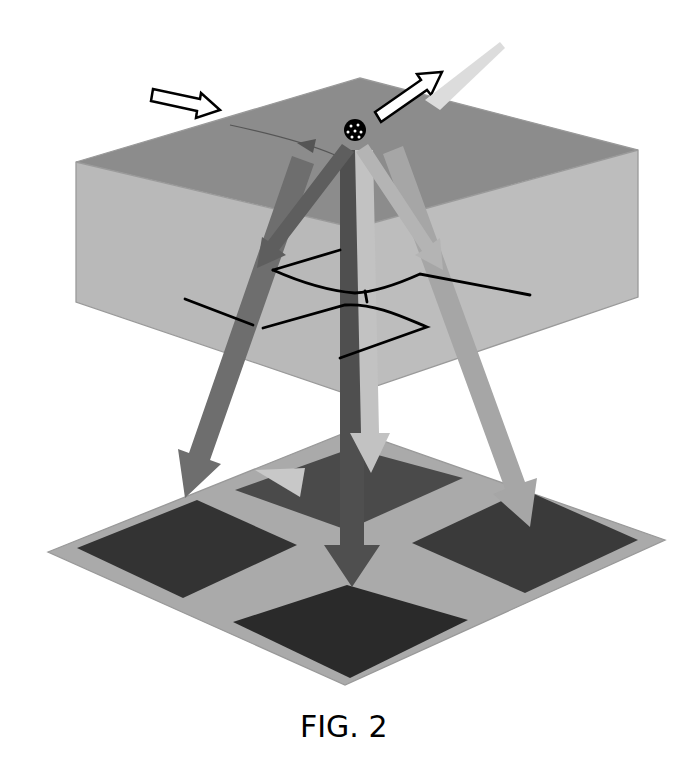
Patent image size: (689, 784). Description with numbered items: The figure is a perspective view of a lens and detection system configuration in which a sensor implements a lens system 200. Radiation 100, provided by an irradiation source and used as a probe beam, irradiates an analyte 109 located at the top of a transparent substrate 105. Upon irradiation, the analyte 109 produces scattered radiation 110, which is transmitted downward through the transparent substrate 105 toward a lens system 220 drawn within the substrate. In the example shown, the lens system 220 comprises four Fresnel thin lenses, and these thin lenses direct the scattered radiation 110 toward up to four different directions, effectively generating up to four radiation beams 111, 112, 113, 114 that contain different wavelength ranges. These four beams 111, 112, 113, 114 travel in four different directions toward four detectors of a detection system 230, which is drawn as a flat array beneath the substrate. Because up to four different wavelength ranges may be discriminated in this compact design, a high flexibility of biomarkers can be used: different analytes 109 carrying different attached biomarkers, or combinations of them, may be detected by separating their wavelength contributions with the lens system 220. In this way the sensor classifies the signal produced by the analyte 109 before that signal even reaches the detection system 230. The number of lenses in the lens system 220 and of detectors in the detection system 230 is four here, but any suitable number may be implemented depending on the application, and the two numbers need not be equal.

The lens system 200 is at (116, 52).
The radiation 100 is at (189, 92).
The analyte 109 is at (345, 122).
The scattered radiation 110 is at (388, 190).
The transparent substrate 105 is at (620, 228).
The lens system 220 is at (180, 330).
The radiation beam 111 is at (200, 413).
The radiation beam 114 is at (378, 422).
The radiation beam 113 is at (500, 452).
The radiation beam 112 is at (352, 530).
The detection system 230 is at (203, 613).